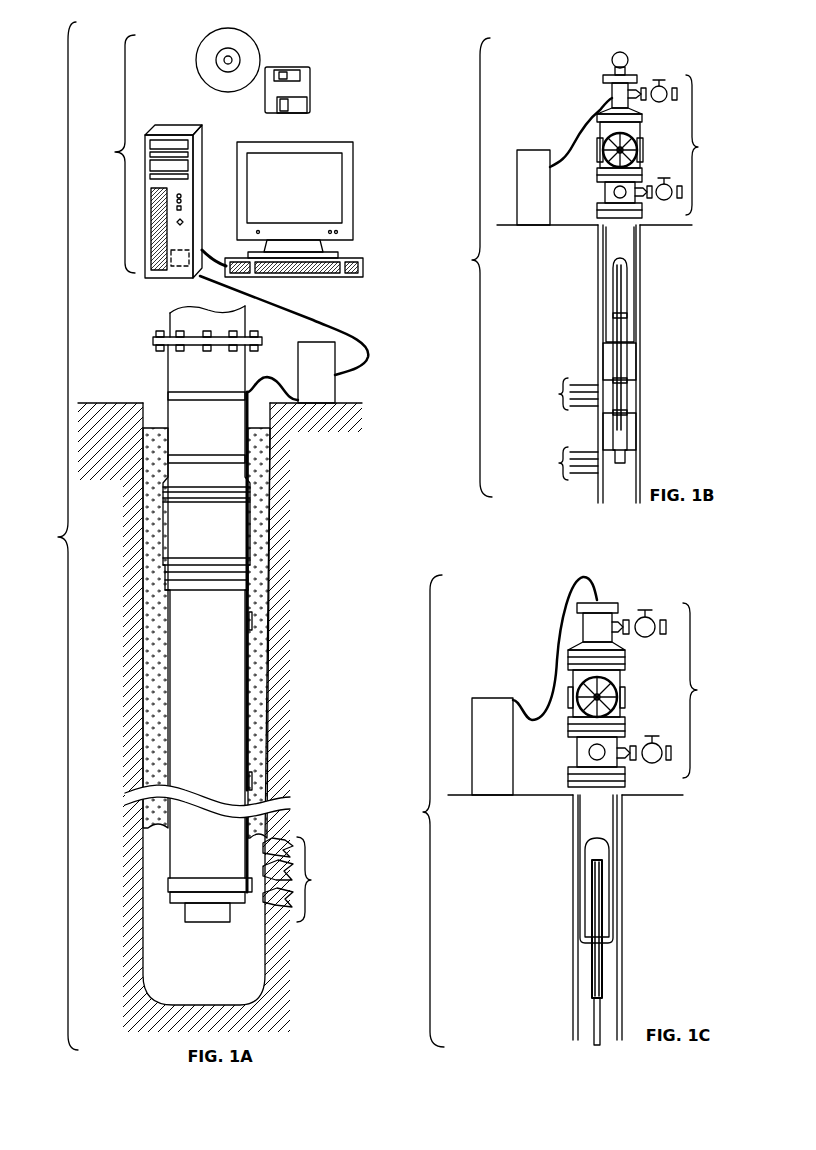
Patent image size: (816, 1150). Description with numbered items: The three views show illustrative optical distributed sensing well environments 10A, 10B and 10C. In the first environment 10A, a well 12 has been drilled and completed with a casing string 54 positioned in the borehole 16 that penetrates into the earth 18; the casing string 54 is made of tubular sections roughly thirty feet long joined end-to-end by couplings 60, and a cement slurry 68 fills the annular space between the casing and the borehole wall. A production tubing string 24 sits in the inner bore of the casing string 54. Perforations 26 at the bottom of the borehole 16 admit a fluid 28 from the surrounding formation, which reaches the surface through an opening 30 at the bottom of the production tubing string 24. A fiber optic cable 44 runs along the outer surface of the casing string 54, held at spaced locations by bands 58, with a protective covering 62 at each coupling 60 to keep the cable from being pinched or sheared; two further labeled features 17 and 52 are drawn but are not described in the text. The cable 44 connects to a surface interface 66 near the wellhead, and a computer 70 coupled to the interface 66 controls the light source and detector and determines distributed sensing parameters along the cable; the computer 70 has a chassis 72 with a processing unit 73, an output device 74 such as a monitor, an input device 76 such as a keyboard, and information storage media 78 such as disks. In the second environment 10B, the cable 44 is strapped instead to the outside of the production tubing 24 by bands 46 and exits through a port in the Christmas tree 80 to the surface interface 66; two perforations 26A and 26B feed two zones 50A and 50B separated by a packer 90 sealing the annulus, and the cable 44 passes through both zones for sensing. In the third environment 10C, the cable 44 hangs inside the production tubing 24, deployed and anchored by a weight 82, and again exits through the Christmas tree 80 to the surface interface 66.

In FIG. 1A, the optical distributed sensing well environment 10A is at (46, 536).
In FIG. 1B, the optical distributed sensing well environment 10B is at (462, 267).
In FIG. 1C, the optical distributed sensing well environment 10C is at (415, 811).
In FIG. 1A, the well 12 is at (124, 335).
In FIG. 1B, the well 12 is at (583, 210).
In FIG. 1C, the well 12 is at (560, 780).
In FIG. 1A, the borehole 16 is at (154, 400).
In FIG. 1B, the borehole 16 is at (600, 252).
In FIG. 1C, the borehole 16 is at (573, 826).
In FIG. 1A, the cable clamps 17 is at (252, 622).
In FIG. 1A, the earth 18 is at (113, 431).
In FIG. 1A, the production tubing string 24 is at (197, 919).
In FIG. 1B, the production tubing string 24 is at (627, 396).
In FIG. 1C, the production tubing string 24 is at (602, 974).
In FIG. 1A, the perforations 26 is at (301, 879).
In FIG. 1B, the perforation 26A is at (562, 394).
In FIG. 1B, the perforation 26B is at (563, 463).
In FIG. 1A, the fluid 28 is at (263, 912).
In FIG. 1A, the opening 30 is at (203, 929).
In FIG. 1A, the fiber optic cable 44 is at (262, 381).
In FIG. 1B, the fiber optic cable 44 is at (583, 137).
In FIG. 1C, the fiber optic cable 44 is at (557, 641).
In FIG. 1B, the bands 46 is at (627, 268).
In FIG. 1B, the zone 50A is at (604, 348).
In FIG. 1B, the zone 50B is at (606, 432).
In FIG. 1A, the cement 52 is at (272, 481).
In FIG. 1A, the casing string 54 is at (168, 383).
In FIG. 1B, the casing string 54 is at (638, 256).
In FIG. 1C, the casing string 54 is at (618, 834).
In FIG. 1A, the bands 58 is at (193, 393).
In FIG. 1A, the couplings 60 is at (235, 542).
In FIG. 1A, the protective covering 62 is at (252, 520).
In FIG. 1A, the surface interface 66 is at (335, 388).
In FIG. 1B, the surface interface 66 is at (517, 203).
In FIG. 1C, the surface interface 66 is at (472, 763).
In FIG. 1A, the cement slurry 68 is at (264, 678).
In FIG. 1A, the computer 70 is at (236, 164).
In FIG. 1A, the chassis 72 is at (202, 150).
In FIG. 1A, the processing unit 73 is at (178, 266).
In FIG. 1A, the output device 74 is at (353, 195).
In FIG. 1A, the input device 76 is at (353, 258).
In FIG. 1A, the non-transient information storage media 78 is at (278, 66).
In FIG. 1B, the Christmas tree 80 is at (660, 135).
In FIG. 1C, the Christmas tree 80 is at (644, 695).
In FIG. 1C, the weight 82 is at (595, 1019).
In FIG. 1B, the packer 90 is at (638, 427).